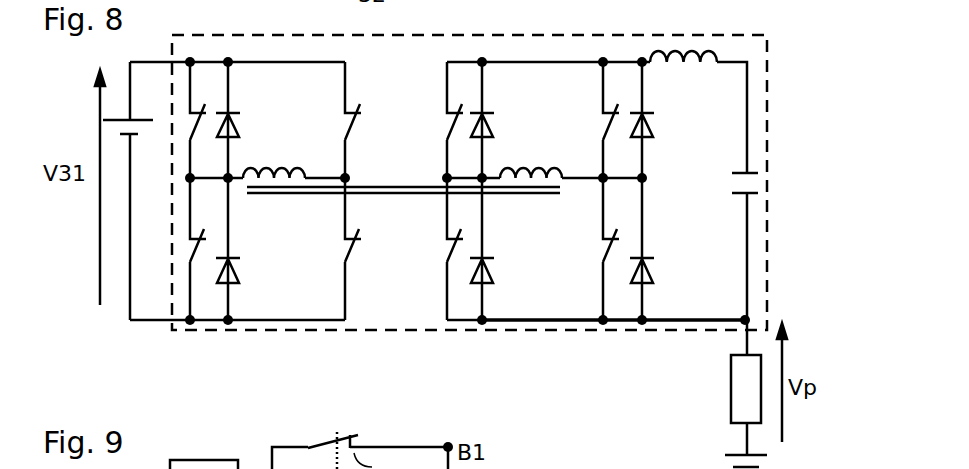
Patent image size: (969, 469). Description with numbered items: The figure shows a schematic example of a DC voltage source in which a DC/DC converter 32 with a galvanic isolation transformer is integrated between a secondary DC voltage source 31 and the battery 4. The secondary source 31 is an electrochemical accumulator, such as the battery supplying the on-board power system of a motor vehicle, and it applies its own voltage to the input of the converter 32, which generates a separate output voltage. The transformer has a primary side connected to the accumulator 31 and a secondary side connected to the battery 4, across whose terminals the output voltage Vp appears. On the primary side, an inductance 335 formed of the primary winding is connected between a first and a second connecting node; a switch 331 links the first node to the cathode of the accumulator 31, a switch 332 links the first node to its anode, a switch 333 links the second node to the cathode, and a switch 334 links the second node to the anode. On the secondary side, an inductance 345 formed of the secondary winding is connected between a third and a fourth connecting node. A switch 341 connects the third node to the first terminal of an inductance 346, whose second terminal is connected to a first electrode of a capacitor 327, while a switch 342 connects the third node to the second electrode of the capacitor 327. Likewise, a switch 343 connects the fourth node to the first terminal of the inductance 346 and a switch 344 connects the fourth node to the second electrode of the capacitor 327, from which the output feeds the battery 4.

The battery 4 is at (731, 388).
The secondary DC voltage source 31 is at (138, 135).
The DC/DC converter 32 is at (473, 333).
The capacitor 327 is at (732, 173).
The switch 331 is at (192, 117).
The switch 332 is at (184, 253).
The switch 333 is at (357, 112).
The switch 334 is at (343, 242).
The inductance 335 is at (266, 164).
The switch 341 is at (444, 117).
The switch 342 is at (445, 242).
The switch 343 is at (615, 113).
The switch 344 is at (601, 242).
The inductance 345 is at (526, 164).
The inductance 346 is at (693, 47).